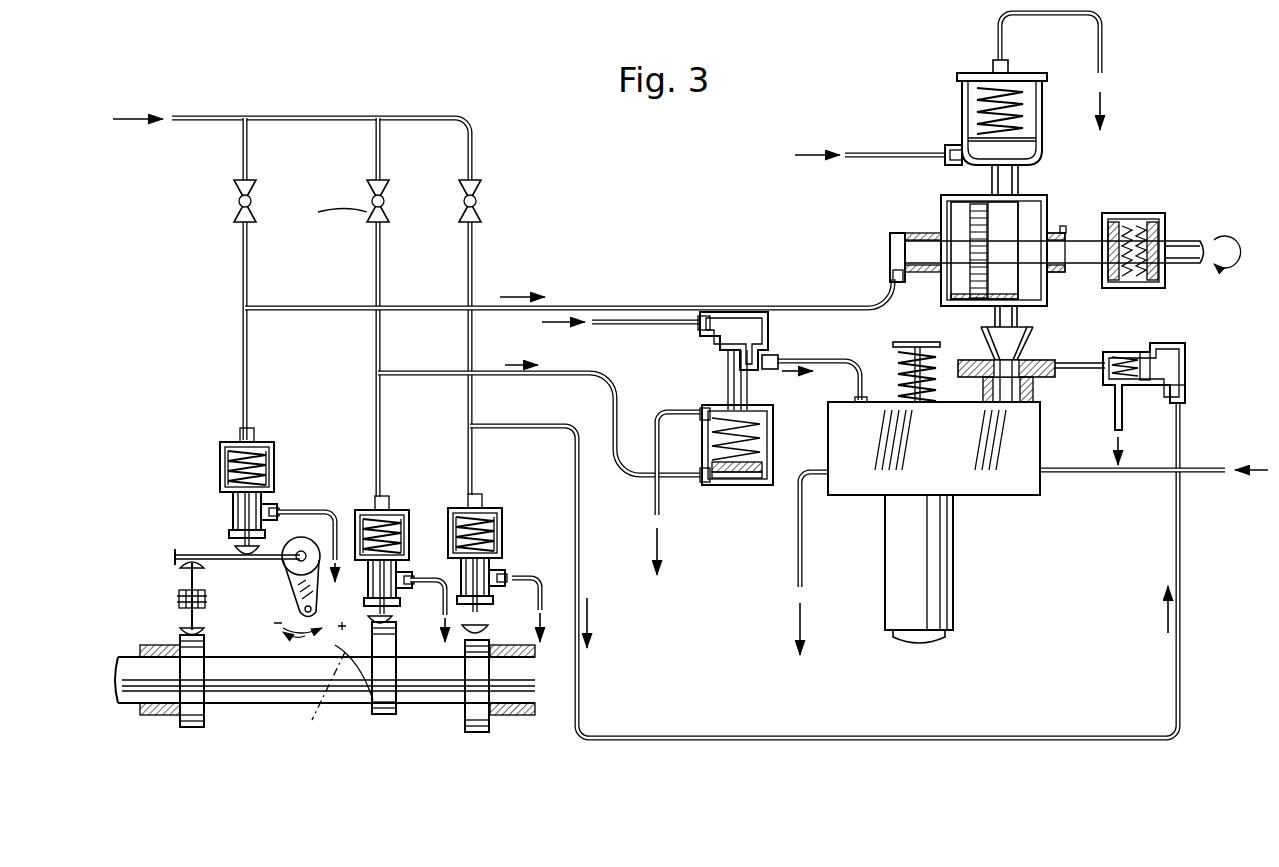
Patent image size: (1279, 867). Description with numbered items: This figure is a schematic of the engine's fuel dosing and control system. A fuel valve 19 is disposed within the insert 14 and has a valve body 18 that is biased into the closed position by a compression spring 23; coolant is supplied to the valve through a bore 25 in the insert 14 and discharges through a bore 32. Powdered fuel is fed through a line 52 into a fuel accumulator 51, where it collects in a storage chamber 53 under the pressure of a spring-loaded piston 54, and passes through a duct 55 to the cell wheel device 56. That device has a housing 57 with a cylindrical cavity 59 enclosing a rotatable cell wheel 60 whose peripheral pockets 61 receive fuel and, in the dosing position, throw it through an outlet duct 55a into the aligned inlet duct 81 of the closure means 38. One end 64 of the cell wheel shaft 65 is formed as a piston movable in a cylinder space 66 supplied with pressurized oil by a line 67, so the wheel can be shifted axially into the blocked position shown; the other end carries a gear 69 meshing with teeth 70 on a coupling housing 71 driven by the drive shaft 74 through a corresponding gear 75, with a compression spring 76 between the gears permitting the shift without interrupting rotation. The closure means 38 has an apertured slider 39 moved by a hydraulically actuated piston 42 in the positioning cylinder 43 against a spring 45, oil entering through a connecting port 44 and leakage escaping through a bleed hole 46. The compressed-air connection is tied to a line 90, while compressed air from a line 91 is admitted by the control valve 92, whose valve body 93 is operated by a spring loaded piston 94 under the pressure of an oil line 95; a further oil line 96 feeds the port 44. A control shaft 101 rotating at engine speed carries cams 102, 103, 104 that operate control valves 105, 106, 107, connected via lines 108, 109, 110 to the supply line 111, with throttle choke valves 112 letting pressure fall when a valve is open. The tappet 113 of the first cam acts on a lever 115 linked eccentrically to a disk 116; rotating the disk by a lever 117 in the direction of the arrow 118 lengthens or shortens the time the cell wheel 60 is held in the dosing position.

The insert 14 is at (955, 543).
The valve body 18 is at (945, 636).
The fuel valve 19 is at (919, 643).
The compression spring 23 is at (930, 402).
The bore 25 is at (1045, 476).
The bore 32 is at (833, 472).
The closure means 38 is at (1060, 358).
The apertured slider 39 is at (1056, 370).
The piston 42 is at (1150, 347).
The positioning cylinder 43 is at (1189, 354).
The connecting port 44 is at (1186, 391).
The spring 45 is at (1119, 346).
The bleed hole 46 is at (1123, 410).
The fuel accumulator 51 is at (1048, 153).
The line 52 is at (899, 153).
The storage chamber 53 is at (1026, 145).
The spring-loaded piston 54 is at (968, 137).
The duct 55 is at (1020, 185).
The outlet duct 55a is at (1018, 316).
The cell wheel device 56 is at (940, 196).
The housing 57 is at (954, 300).
The cylindrical cavity 59 is at (1036, 213).
The cell wheel 60 is at (956, 222).
The peripheral pockets 61 is at (974, 285).
The shaft end 64 is at (890, 246).
The cell wheel shaft 65 is at (890, 258).
The cylinder space 66 is at (892, 232).
The line 67 is at (332, 305).
The gear 69 is at (1113, 213).
The teeth 70 is at (1128, 288).
The coupling housing 71 is at (1168, 280).
The drive shaft 74 is at (1180, 240).
The gear 75 is at (1156, 212).
The compression spring 76 is at (1140, 216).
The inlet duct 81 is at (984, 333).
The line 90 is at (795, 361).
The line 91 is at (628, 323).
The compressed-air control valve 92 is at (718, 404).
The valve body 93 is at (742, 318).
The spring loaded piston 94 is at (740, 466).
The pressurized oil line 95 is at (420, 372).
The pressurized-oil line 96 is at (580, 545).
The control shaft 101 is at (268, 707).
The cam 102 is at (181, 728).
The cam 103 is at (383, 718).
The cam 104 is at (483, 740).
The control valve 105 is at (219, 461).
The control valve 106 is at (362, 507).
The control valve 107 is at (503, 521).
The line 108 is at (243, 158).
The line 109 is at (376, 158).
The line 110 is at (474, 157).
The line 111 is at (222, 117).
The throttle choke valves 112 is at (258, 212).
The tappet 113 is at (188, 578).
The lever 115 is at (222, 554).
The disk 116 is at (296, 564).
The lever 117 is at (298, 608).
The arrow 118 is at (300, 636).